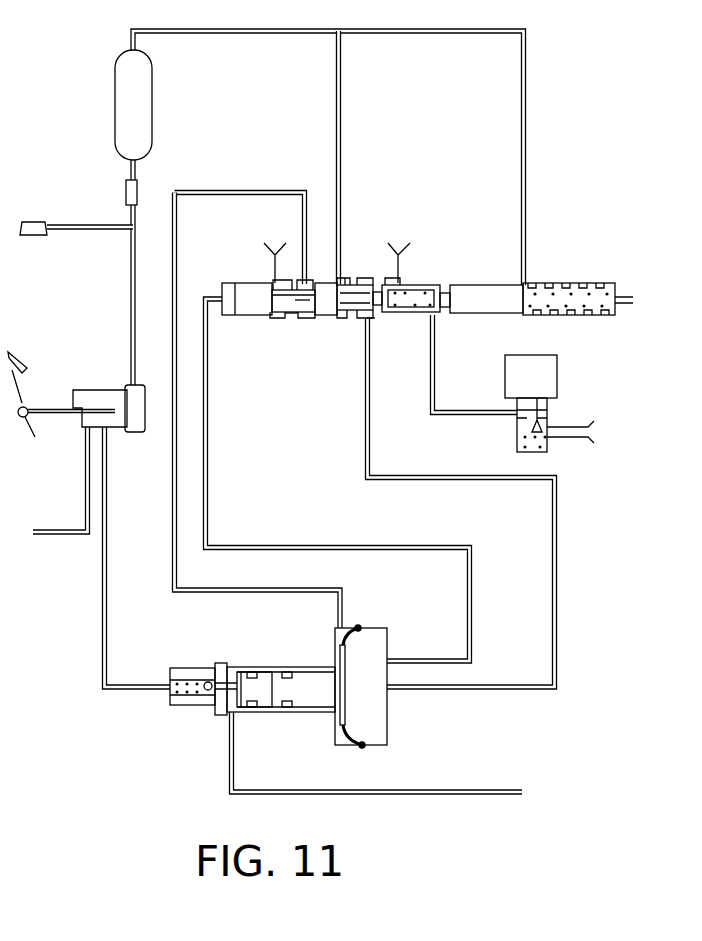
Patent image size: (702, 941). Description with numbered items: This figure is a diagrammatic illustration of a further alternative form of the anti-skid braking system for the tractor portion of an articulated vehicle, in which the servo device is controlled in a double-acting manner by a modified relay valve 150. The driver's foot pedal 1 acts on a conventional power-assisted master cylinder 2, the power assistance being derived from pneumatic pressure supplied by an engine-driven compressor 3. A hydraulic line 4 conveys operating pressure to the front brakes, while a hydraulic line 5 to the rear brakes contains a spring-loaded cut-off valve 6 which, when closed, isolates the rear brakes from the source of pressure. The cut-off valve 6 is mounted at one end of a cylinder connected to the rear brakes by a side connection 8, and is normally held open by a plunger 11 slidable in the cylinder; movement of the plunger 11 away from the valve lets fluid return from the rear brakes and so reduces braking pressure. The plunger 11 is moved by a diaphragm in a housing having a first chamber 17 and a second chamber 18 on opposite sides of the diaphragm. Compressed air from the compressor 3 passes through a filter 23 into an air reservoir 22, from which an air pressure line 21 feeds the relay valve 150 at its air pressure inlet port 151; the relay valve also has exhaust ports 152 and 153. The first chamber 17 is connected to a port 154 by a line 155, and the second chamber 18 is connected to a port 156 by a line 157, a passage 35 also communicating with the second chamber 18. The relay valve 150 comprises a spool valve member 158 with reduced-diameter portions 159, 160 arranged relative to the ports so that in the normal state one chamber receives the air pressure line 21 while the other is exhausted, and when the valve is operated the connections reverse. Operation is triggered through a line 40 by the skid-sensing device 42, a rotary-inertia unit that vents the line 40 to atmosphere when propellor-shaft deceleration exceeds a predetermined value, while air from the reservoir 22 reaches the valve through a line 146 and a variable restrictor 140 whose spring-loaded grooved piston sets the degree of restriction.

The foot pedal 1 is at (30, 395).
The power-assisted master cylinder 2 is at (140, 403).
The compressor 3 is at (50, 232).
The hydraulic line 4 is at (53, 526).
The hydraulic line 5 is at (107, 583).
The cut-off valve 6 is at (206, 681).
The side connection 8 is at (277, 788).
The plunger 11 is at (258, 677).
The first chamber 17 is at (347, 632).
The second chamber 18 is at (375, 642).
The air pressure line 21 is at (341, 100).
The air reservoir 22 is at (152, 78).
The filter 23 is at (140, 185).
The passage 35 is at (208, 448).
The line 40 is at (435, 392).
The skid-sensing device 42 is at (548, 383).
The variable restrictor 140 is at (552, 283).
The line 146 is at (526, 98).
The relay valve 150 is at (235, 278).
The air pressure inlet port 151 is at (352, 283).
The exhaust port 152 is at (270, 283).
The exhaust port 153 is at (407, 283).
The port 154 is at (318, 283).
The line 155 is at (172, 492).
The port 156 is at (373, 312).
The line 157 is at (370, 437).
The spool valve member 158 is at (293, 314).
The reduced-diameter portion 159 is at (305, 305).
The reduced-diameter portion 160 is at (370, 283).